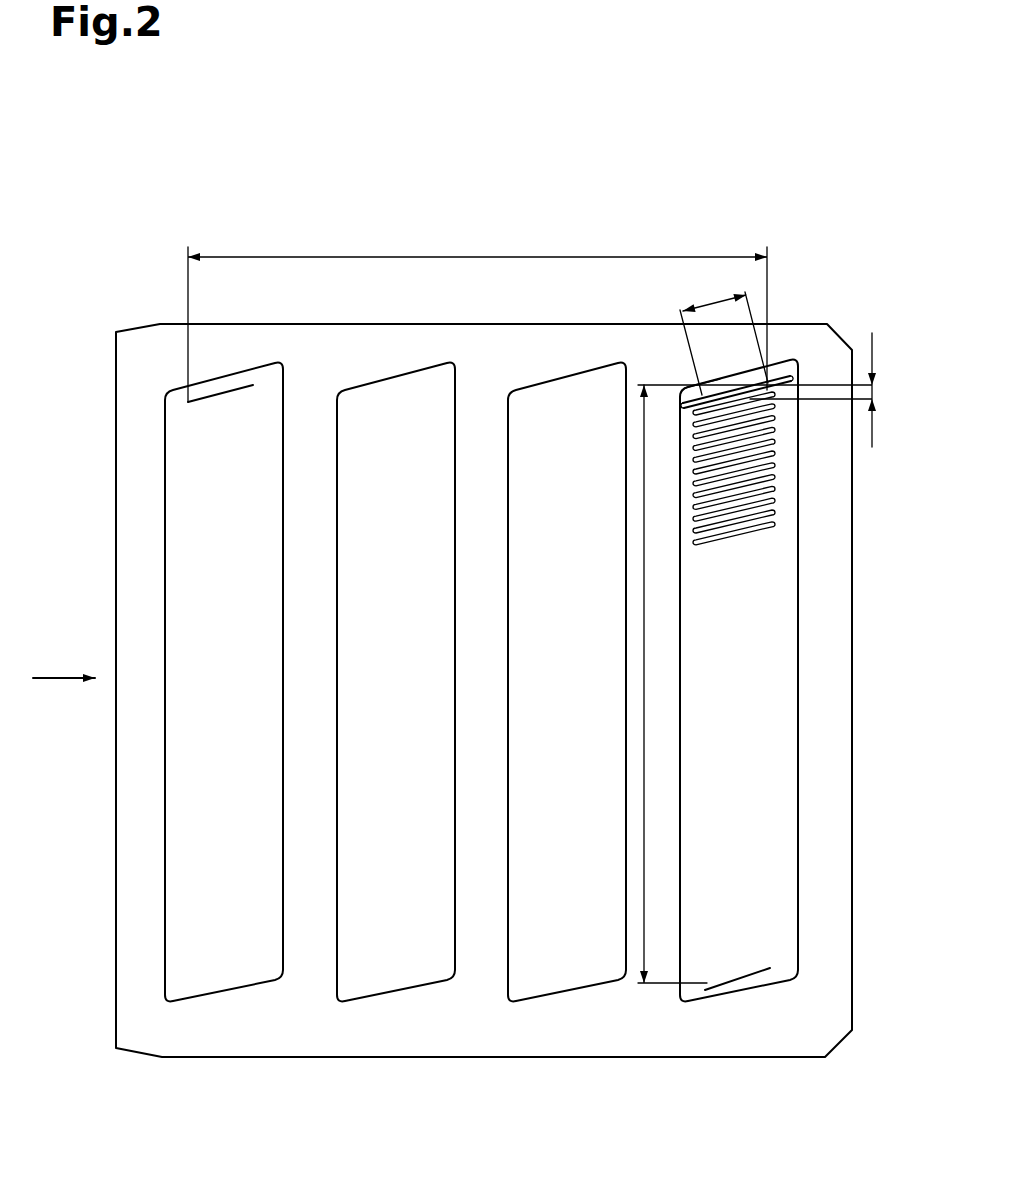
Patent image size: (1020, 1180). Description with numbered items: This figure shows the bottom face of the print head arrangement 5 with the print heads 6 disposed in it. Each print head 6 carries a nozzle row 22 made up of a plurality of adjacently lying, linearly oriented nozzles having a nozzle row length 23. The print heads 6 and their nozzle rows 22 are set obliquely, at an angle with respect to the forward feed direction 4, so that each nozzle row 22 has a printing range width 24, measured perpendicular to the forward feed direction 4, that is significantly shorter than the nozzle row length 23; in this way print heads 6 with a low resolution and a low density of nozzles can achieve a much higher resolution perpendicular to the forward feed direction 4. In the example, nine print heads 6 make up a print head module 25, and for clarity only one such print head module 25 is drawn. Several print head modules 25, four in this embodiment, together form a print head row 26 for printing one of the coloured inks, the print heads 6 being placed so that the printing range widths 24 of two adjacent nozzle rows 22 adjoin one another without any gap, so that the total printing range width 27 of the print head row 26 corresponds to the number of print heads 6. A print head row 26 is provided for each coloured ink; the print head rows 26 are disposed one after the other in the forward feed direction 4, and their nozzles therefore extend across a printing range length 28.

The forward feed direction 4 is at (47, 678).
The print head arrangement 5 is at (107, 1003).
The print head 6 is at (760, 502).
The nozzle row 22 is at (748, 397).
The nozzle row length 23 is at (715, 300).
The printing range width 24 is at (870, 352).
The print head module 25 is at (670, 380).
The print head row 26 is at (255, 1002).
The total printing range width 27 is at (642, 619).
The printing range length 28 is at (490, 257).